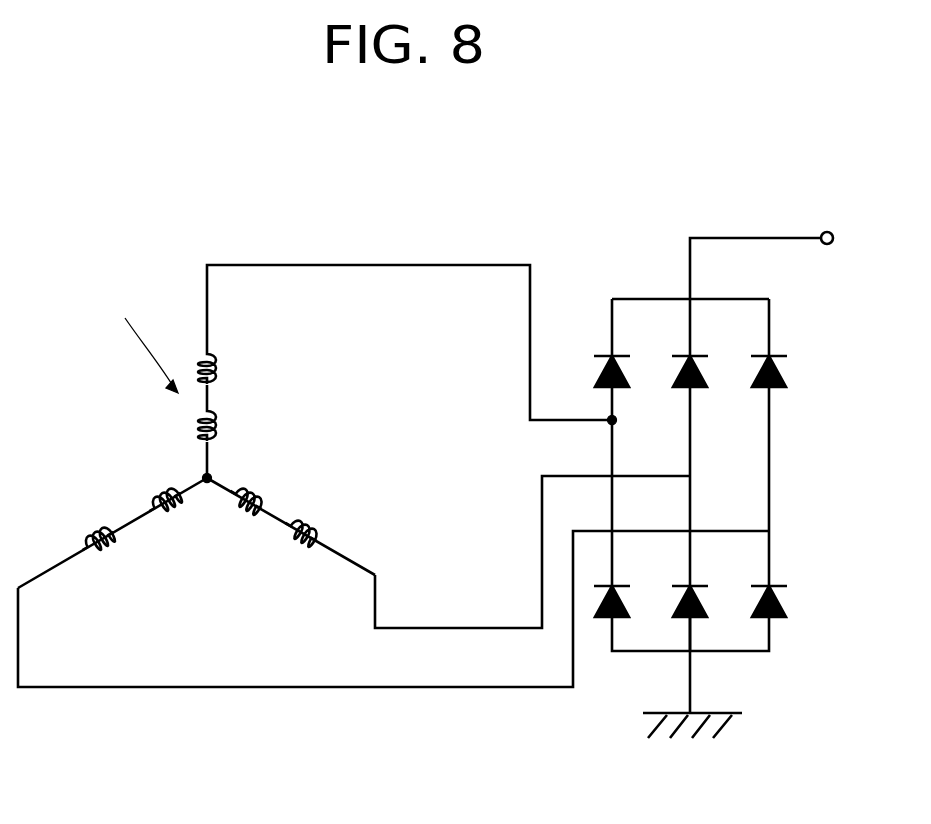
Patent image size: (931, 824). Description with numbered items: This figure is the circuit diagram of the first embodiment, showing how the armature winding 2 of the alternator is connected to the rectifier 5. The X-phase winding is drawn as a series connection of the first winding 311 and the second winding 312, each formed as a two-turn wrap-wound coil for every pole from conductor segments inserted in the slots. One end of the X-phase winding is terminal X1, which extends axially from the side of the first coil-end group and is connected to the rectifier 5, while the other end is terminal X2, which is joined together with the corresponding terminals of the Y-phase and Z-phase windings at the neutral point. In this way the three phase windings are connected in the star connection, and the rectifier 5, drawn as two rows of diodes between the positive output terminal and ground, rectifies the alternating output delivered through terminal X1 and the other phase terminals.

The stator winding (X-phase winding of the alternator) 2 is at (196, 361).
The first winding 311 is at (220, 363).
The second winding 312 is at (220, 420).
The rectifier 5 is at (787, 377).
The terminal X1 is at (610, 420).
The terminal X2 is at (205, 477).